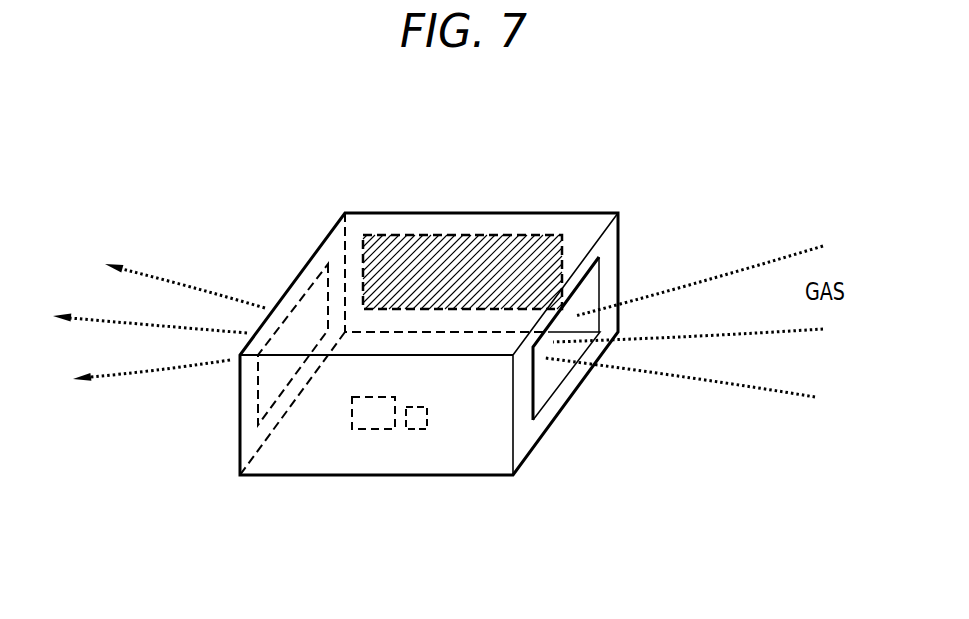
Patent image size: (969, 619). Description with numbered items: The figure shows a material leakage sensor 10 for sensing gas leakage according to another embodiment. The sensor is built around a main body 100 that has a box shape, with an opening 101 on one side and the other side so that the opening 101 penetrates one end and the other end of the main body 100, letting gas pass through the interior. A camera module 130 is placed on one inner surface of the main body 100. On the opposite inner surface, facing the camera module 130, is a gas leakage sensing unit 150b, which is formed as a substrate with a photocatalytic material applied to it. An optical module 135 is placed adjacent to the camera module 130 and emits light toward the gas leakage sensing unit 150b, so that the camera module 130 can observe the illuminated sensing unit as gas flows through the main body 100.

The material leakage sensor 10 is at (590, 188).
The main body 100 is at (337, 245).
The opening 101 is at (580, 302).
The gas leakage sensing unit 150b is at (466, 262).
The camera module 130 is at (366, 422).
The optical module 135 is at (422, 422).